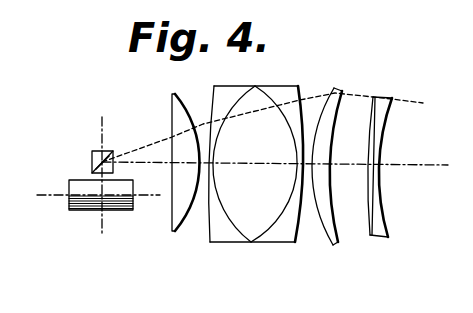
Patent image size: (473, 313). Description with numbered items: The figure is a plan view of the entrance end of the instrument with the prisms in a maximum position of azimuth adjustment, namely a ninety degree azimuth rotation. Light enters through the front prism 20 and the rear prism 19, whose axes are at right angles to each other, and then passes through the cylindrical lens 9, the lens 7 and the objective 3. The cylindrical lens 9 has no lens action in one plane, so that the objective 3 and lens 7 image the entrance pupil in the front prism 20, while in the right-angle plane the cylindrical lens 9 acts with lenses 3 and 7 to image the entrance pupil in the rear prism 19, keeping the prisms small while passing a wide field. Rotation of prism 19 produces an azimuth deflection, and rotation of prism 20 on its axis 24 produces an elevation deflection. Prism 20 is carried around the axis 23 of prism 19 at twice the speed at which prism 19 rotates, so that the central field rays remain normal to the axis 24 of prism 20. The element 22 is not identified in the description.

The objective 3 is at (165, 246).
The lens 7 is at (377, 207).
The cylindrical lens 9 is at (373, 128).
The rear prism 19 is at (107, 151).
The front prism 20 is at (88, 211).
The light ray 22 is at (160, 142).
The axis of prism 19 23 is at (101, 161).
The axis of prism 20 24 is at (52, 194).